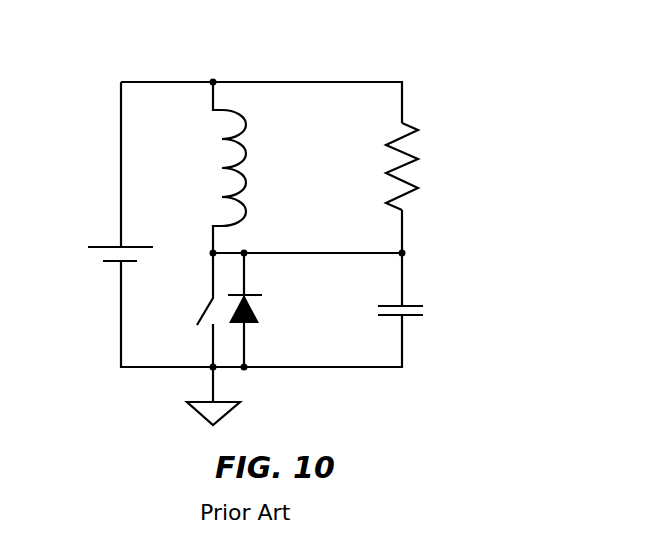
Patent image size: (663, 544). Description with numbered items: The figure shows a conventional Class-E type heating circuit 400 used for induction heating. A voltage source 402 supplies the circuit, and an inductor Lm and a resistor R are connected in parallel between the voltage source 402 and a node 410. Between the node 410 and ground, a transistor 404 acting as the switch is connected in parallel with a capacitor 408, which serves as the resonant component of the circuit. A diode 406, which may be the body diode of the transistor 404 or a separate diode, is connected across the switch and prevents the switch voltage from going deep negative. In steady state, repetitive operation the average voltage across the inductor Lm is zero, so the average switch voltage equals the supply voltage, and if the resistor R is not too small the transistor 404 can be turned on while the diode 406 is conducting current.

The heating circuit 400 is at (445, 56).
The voltage source 402 is at (108, 243).
The transistor 404 is at (206, 316).
The diode 406 is at (250, 320).
The capacitor 408 is at (406, 318).
The node 410 is at (212, 250).